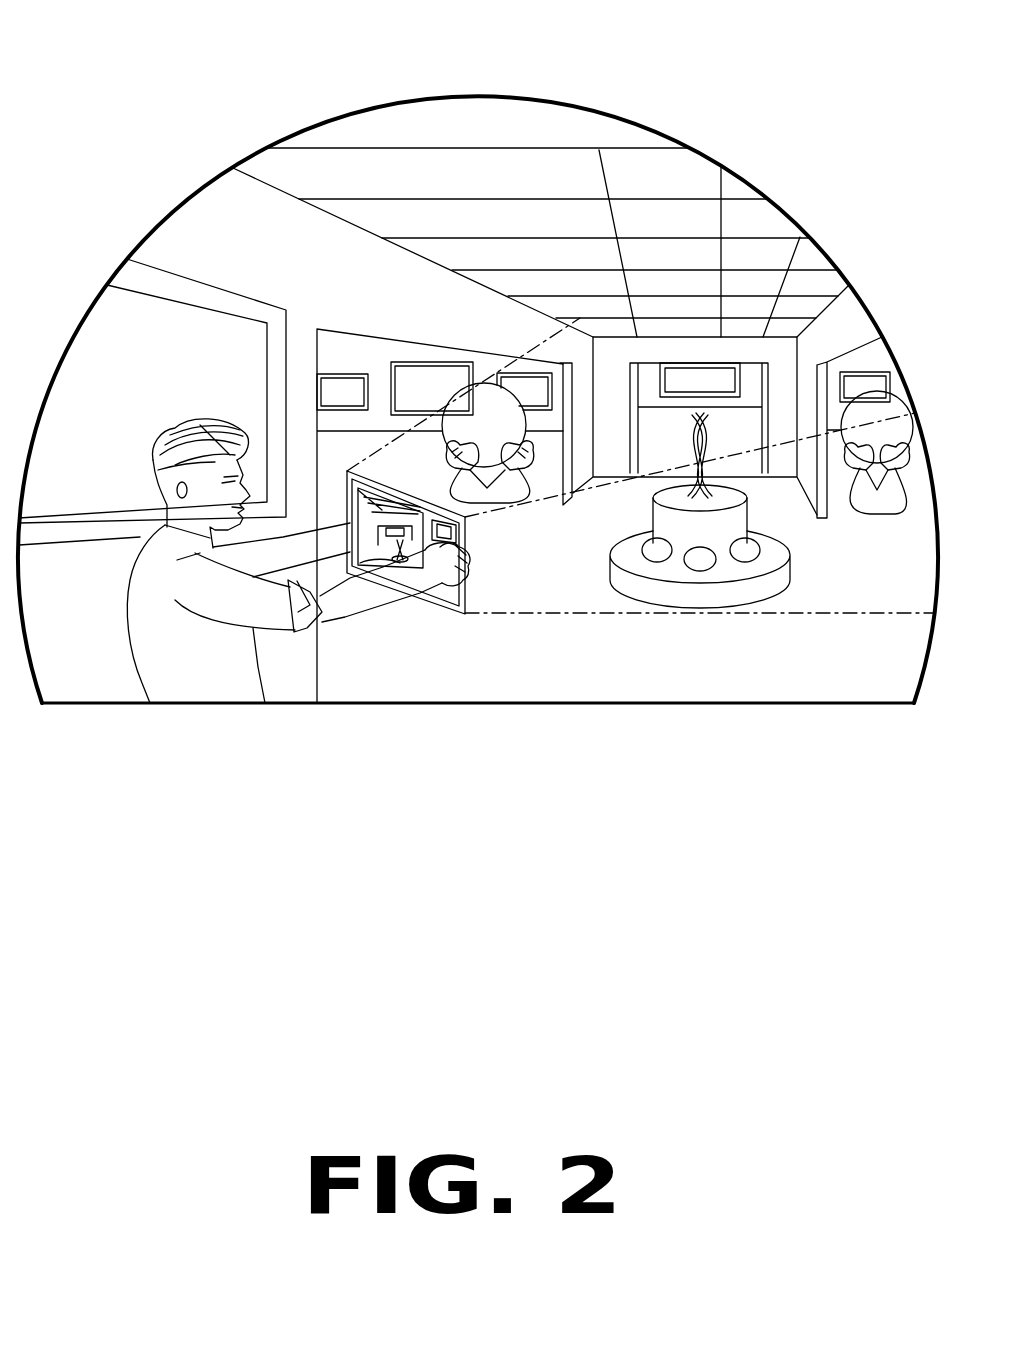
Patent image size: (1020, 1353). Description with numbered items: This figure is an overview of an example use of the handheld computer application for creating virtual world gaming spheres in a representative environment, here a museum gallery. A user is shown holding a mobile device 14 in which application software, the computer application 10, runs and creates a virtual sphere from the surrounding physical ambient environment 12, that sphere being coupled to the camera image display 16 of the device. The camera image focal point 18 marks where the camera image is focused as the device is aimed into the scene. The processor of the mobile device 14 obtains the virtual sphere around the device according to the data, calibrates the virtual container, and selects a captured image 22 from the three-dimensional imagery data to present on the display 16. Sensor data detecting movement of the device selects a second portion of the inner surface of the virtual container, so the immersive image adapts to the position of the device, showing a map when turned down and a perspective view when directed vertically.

The computer application 10 is at (400, 535).
The physical ambient environment 12 is at (427, 217).
The mobile device 14 is at (433, 604).
The camera image display 16 is at (381, 552).
The camera image focal point 18 is at (398, 543).
The captured image 22 is at (360, 485).